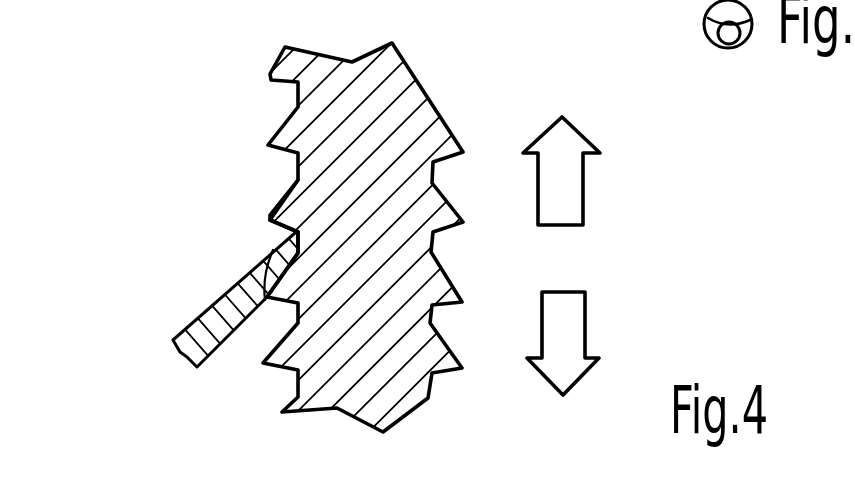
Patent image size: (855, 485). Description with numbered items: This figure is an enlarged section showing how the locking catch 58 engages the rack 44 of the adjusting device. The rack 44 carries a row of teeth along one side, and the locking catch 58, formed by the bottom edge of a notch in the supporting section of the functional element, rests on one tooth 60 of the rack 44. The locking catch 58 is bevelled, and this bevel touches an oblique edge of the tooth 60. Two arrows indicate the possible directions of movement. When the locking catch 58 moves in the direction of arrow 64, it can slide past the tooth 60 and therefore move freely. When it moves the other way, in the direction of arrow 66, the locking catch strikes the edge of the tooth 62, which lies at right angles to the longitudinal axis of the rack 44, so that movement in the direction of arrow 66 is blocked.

The rack 44 is at (343, 120).
The tooth 62 is at (280, 202).
The tooth 60 is at (270, 253).
The locking catch 58 is at (213, 302).
The arrow 64 is at (567, 323).
The arrow 66 is at (567, 190).